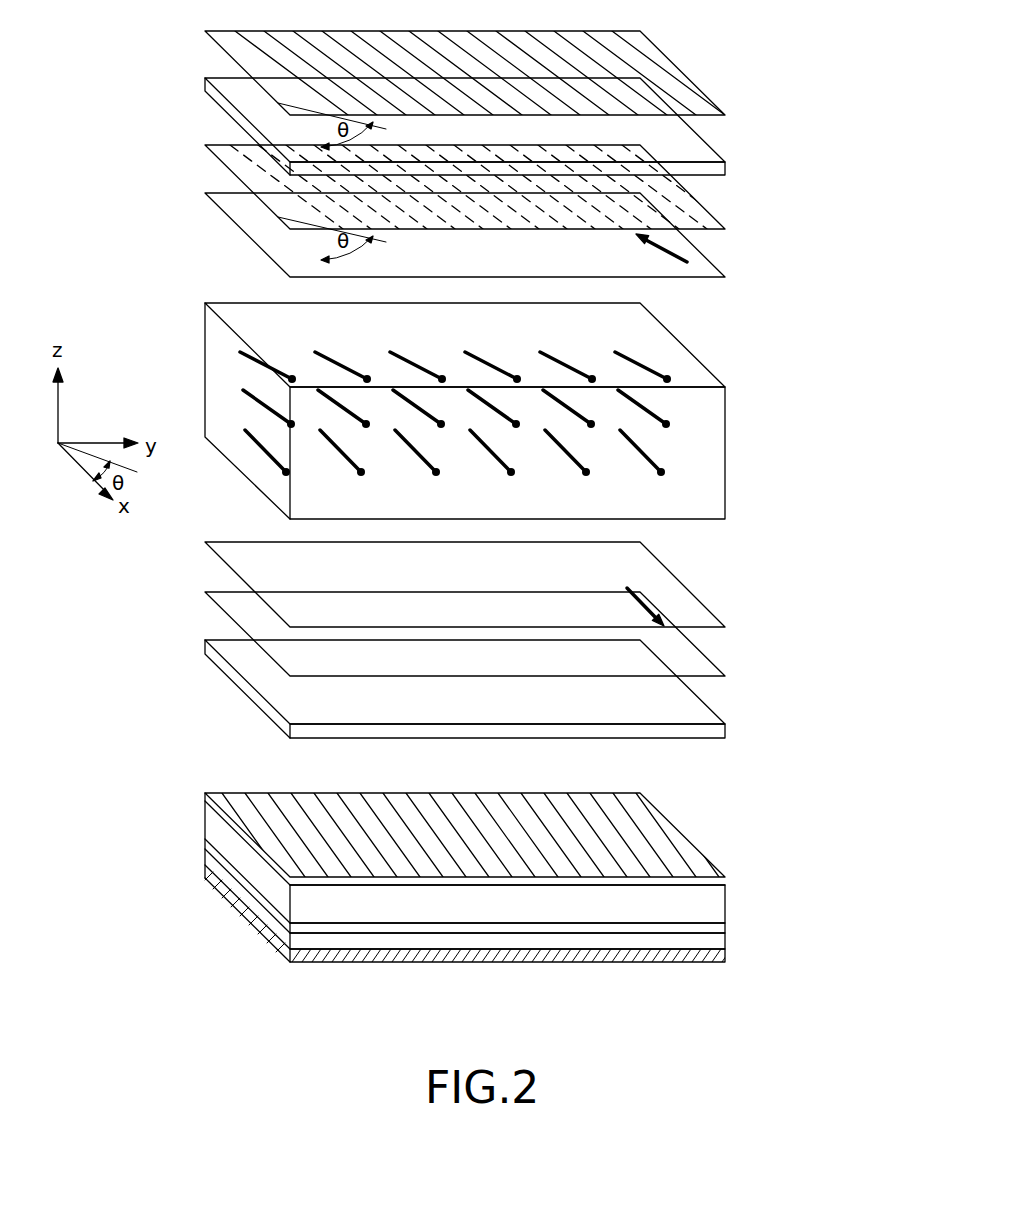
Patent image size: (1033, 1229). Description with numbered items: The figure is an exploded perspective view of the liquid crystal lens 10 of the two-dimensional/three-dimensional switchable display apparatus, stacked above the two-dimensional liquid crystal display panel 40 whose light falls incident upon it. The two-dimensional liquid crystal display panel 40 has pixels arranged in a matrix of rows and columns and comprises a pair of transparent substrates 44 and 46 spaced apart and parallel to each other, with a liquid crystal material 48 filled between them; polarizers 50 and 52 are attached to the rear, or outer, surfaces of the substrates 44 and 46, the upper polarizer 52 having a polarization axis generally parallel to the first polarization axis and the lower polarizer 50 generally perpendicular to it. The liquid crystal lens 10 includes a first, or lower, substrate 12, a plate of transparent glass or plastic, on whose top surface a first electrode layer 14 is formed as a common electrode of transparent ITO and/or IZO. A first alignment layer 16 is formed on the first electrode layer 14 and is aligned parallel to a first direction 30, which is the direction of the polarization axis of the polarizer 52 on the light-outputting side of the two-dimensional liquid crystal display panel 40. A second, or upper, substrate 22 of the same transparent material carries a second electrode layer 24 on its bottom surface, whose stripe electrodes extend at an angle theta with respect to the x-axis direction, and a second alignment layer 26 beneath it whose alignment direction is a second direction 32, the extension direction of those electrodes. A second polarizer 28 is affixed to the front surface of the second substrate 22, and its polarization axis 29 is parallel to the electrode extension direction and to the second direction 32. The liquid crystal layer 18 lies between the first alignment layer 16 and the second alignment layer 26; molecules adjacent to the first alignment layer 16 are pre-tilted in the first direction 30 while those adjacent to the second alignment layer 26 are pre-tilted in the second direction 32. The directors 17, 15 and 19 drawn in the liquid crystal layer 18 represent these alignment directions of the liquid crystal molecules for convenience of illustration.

The liquid crystal lens 10 is at (180, 653).
The first substrate 12 is at (702, 712).
The first electrode layer 14 is at (692, 662).
The director 15 is at (655, 418).
The first alignment layer 16 is at (650, 562).
The director 17 is at (647, 455).
The liquid crystal layer 18 is at (718, 482).
The director 19 is at (653, 367).
The second substrate 22 is at (697, 147).
The second electrode layer 24 is at (692, 210).
The second alignment layer 26 is at (690, 257).
The second polarizer 28 is at (683, 95).
The polarization axis 29 is at (647, 53).
The first direction 30 is at (650, 602).
The second direction 32 is at (663, 252).
The 2D liquid crystal display panel 40 is at (180, 793).
The substrate 44 is at (717, 939).
The substrate 46 is at (715, 907).
The liquid crystal material 48 is at (718, 928).
The polarizer 50 is at (717, 953).
The polarizer 52 is at (645, 820).